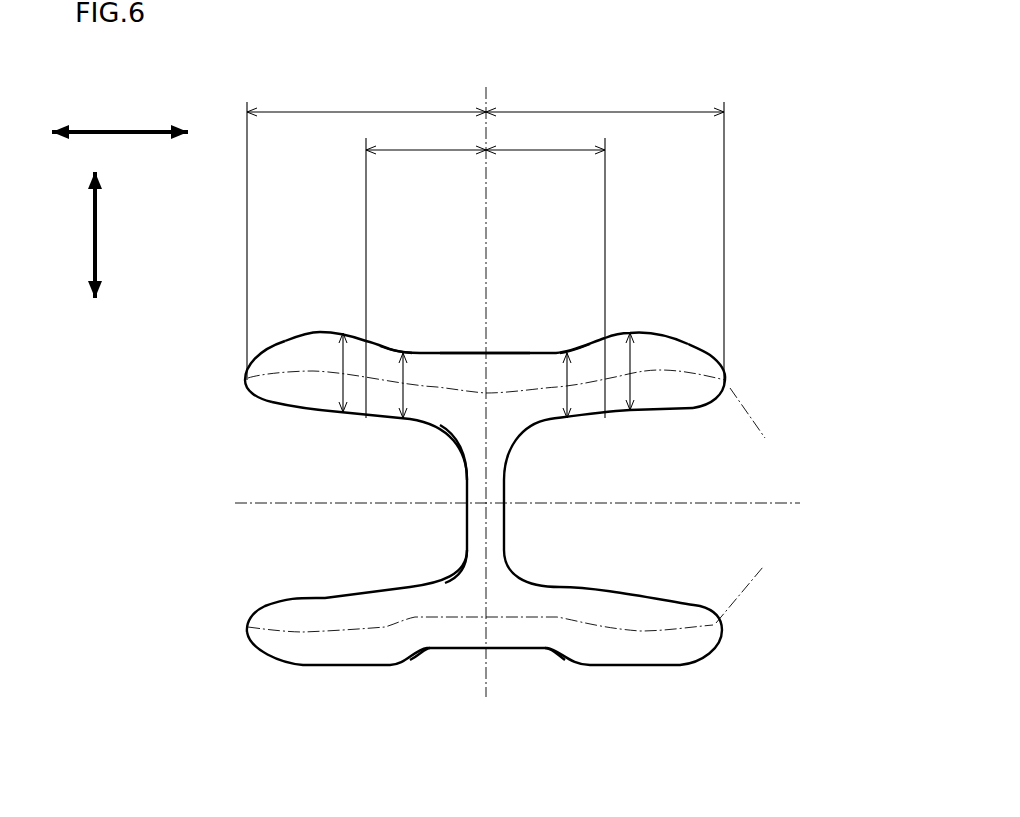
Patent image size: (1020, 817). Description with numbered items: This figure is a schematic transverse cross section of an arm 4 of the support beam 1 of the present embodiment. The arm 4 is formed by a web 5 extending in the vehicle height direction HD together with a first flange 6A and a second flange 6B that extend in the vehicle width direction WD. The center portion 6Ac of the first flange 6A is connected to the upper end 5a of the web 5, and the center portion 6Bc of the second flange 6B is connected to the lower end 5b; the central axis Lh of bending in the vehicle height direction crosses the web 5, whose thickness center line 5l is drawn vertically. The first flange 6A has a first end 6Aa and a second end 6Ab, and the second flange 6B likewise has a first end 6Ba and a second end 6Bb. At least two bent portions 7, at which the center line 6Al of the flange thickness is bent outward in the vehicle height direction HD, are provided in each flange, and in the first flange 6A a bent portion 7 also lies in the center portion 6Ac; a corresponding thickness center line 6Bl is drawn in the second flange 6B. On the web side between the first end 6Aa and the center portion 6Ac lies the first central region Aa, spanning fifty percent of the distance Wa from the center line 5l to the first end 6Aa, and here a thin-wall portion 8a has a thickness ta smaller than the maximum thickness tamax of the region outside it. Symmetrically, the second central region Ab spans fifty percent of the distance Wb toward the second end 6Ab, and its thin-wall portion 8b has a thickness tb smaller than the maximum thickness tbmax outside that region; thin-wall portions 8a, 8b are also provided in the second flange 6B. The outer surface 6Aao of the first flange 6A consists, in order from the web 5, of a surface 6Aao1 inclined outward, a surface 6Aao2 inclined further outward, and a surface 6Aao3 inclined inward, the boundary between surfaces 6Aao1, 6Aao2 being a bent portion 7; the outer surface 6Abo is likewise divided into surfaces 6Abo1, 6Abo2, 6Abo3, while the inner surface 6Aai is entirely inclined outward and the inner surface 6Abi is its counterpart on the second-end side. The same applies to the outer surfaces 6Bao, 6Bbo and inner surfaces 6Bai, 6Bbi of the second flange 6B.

The support beam 1 is at (160, 73).
The arm 4 is at (766, 316).
The web 5 is at (466, 490).
The upper end 5a is at (455, 438).
The lower end 5b is at (460, 578).
The center line of the thickness of the web 5l is at (496, 375).
The first flange 6A is at (743, 370).
The first end 6Aa is at (728, 381).
The second end 6Ab is at (245, 380).
The center portion 6Ac is at (493, 358).
The inner surface 6Aai is at (645, 411).
The inner surface 6Abi is at (330, 411).
The outer surface 6Aao is at (527, 198).
The surface 6Aao1 is at (542, 352).
The surface 6Aao2 is at (622, 339).
The surface 6Aao3 is at (690, 340).
The outer surface 6Abo is at (175, 198).
The surface 6Abo1 is at (427, 351).
The surface 6Abo2 is at (352, 340).
The surface 6Abo3 is at (283, 338).
The center line of the thickness of the flange 6Al is at (759, 426).
The second flange 6B is at (742, 633).
The first end 6Ba is at (715, 610).
The second end 6Bb is at (247, 627).
The center portion 6Bc is at (492, 648).
The inner surface 6Bai is at (645, 597).
The inner surface 6Bbi is at (328, 597).
The outer surface 6Bao is at (623, 666).
The outer surface 6Bbo is at (348, 667).
The second flange center line 6Bl is at (751, 581).
The bent portion 7 is at (360, 386).
The thin-wall portion 8a is at (582, 351).
The thin-wall portion 8b is at (388, 349).
The central axis of the bending in the vehicle height direction Lh is at (532, 502).
The vehicle width direction WD is at (120, 116).
The vehicle height direction HD is at (114, 235).
The distance Wa is at (605, 236).
The distance Wb is at (366, 233).
The first central region Aa is at (545, 270).
The second central region Ab is at (426, 270).
The thickness ta is at (551, 386).
The thickness tb is at (420, 385).
The maximum thickness tamax is at (665, 371).
The maximum thickness tbmax is at (306, 372).